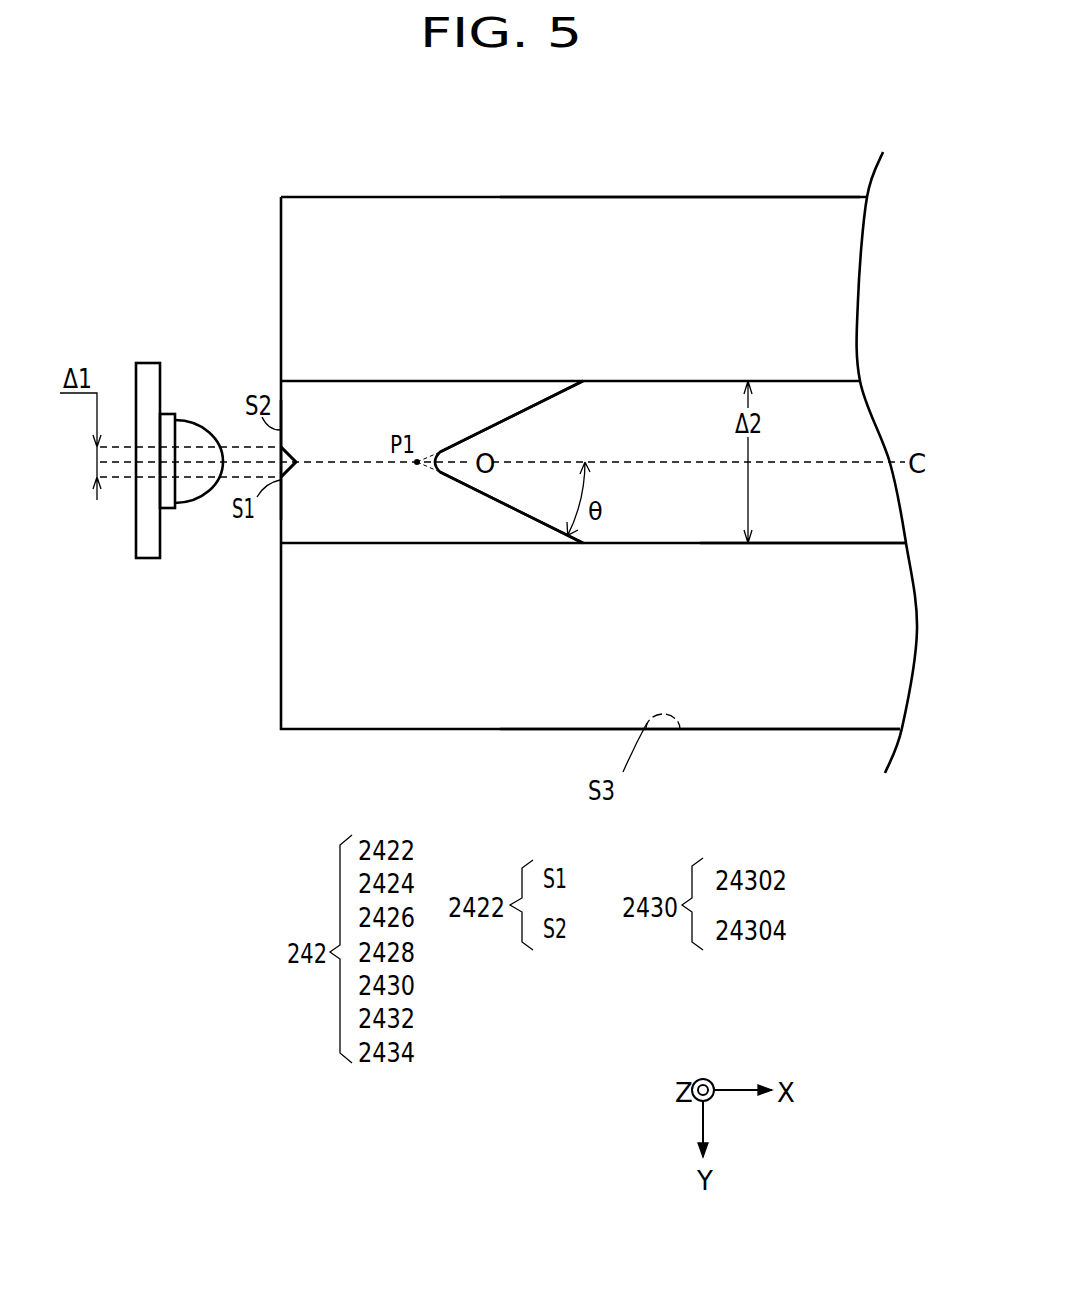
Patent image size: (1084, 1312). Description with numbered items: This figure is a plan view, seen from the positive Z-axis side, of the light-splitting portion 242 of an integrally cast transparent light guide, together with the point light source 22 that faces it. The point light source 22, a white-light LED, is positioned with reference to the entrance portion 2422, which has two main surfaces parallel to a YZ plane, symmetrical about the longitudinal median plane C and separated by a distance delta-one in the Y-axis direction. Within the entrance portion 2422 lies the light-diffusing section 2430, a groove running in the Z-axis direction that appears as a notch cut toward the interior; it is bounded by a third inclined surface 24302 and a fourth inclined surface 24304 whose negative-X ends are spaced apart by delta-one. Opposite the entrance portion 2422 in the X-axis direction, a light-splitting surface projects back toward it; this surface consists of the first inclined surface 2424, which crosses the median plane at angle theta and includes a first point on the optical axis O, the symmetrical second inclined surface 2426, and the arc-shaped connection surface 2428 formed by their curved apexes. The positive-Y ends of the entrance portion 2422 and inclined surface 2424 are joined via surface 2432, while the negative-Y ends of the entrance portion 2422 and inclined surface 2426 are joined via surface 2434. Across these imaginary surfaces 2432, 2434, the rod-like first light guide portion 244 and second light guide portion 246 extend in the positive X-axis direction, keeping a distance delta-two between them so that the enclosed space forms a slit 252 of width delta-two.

The point light source 22 is at (148, 558).
The light-splitting portion 242 is at (375, 352).
The entrance portion 2422 is at (266, 531).
The first inclined surface 2424 is at (500, 495).
The second inclined surface 2426 is at (500, 423).
The connection surface 2428 is at (436, 455).
The light-diffusing section 2430 is at (314, 473).
The third inclined surface 24302 is at (292, 470).
The fourth inclined surface 24304 is at (288, 455).
The surface 2432 is at (332, 543).
The surface 2434 is at (507, 382).
The first light guide portion 244 is at (810, 745).
The second light guide portion 246 is at (810, 178).
The slit 252 is at (845, 535).